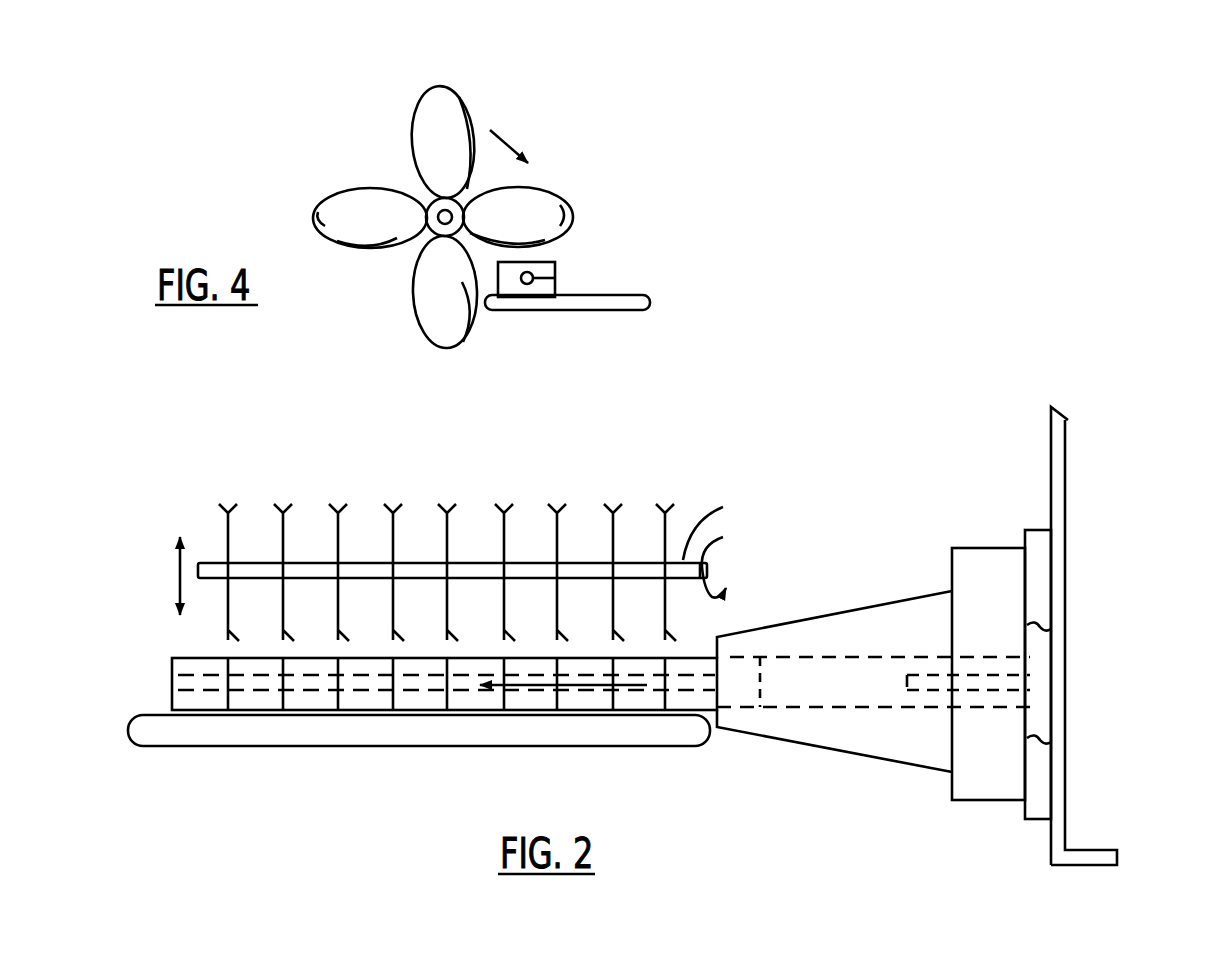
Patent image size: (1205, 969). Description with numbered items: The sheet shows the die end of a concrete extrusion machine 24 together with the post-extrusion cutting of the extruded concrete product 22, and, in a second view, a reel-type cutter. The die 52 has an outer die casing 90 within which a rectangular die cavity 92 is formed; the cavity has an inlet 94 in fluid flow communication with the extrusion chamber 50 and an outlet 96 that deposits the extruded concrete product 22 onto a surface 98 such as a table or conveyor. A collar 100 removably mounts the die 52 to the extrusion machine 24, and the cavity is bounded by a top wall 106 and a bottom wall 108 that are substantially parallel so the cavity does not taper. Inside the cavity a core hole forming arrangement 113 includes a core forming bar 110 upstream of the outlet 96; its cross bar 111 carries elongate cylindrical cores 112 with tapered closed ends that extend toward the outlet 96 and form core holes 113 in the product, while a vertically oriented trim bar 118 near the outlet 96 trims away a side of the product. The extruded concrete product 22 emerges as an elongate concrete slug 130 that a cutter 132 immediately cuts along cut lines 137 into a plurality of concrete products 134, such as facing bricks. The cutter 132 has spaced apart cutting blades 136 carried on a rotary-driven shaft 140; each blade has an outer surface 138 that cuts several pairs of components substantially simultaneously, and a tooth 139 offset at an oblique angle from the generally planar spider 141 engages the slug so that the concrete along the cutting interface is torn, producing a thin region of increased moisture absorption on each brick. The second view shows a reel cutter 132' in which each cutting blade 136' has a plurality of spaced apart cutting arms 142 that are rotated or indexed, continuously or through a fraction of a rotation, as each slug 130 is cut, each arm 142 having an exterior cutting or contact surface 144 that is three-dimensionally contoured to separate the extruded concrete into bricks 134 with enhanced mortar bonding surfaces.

In FIG. 4, the extruded concrete product 22 is at (580, 244).
In FIG. 2, the extrusion machine 24 is at (999, 458).
In FIG. 2, the extrusion chamber 50 is at (1140, 810).
In FIG. 2, the die 52 is at (893, 777).
In FIG. 2, the outer die casing 90 is at (930, 760).
In FIG. 2, the die cavity 92 is at (822, 700).
In FIG. 2, the inlet 94 is at (1034, 653).
In FIG. 2, the outlet 96 is at (701, 613).
In FIG. 4, the surface 98 is at (654, 296).
In FIG. 2, the surface 98 is at (126, 747).
In FIG. 2, the collar 100 is at (1028, 530).
In FIG. 2, the top wall 106 is at (800, 652).
In FIG. 2, the bottom wall 108 is at (880, 700).
In FIG. 2, the core forming bar 110 is at (1036, 690).
In FIG. 2, the cross bar 111 is at (1030, 680).
In FIG. 2, the core 112 is at (920, 675).
In FIG. 4, the core hole forming arrangement 113 is at (535, 278).
In FIG. 2, the core hole forming arrangement 113 is at (268, 730).
In FIG. 2, the trim bar 118 is at (752, 700).
In FIG. 4, the extruded concrete slug 130 is at (555, 265).
In FIG. 2, the extruded concrete slug 130 is at (195, 657).
In FIG. 2, the cutter 132 is at (150, 442).
In FIG. 4, the reel cutter 132' is at (328, 129).
In FIG. 4, the concrete product 134 is at (513, 290).
In FIG. 2, the concrete product 134 is at (172, 668).
In FIG. 2, the cutting blade 136 is at (488, 537).
In FIG. 4, the cutting blade 136' is at (258, 196).
In FIG. 2, the cut line 137 is at (560, 665).
In FIG. 2, the outer surface 138 is at (392, 505).
In FIG. 2, the tooth 139 is at (556, 510).
In FIG. 4, the shaft 140 is at (440, 222).
In FIG. 2, the shaft 140 is at (700, 518).
In FIG. 2, the spider 141 is at (228, 535).
In FIG. 4, the cutting arm 142 is at (431, 112).
In FIG. 4, the cutting or contact surface 144 is at (312, 222).